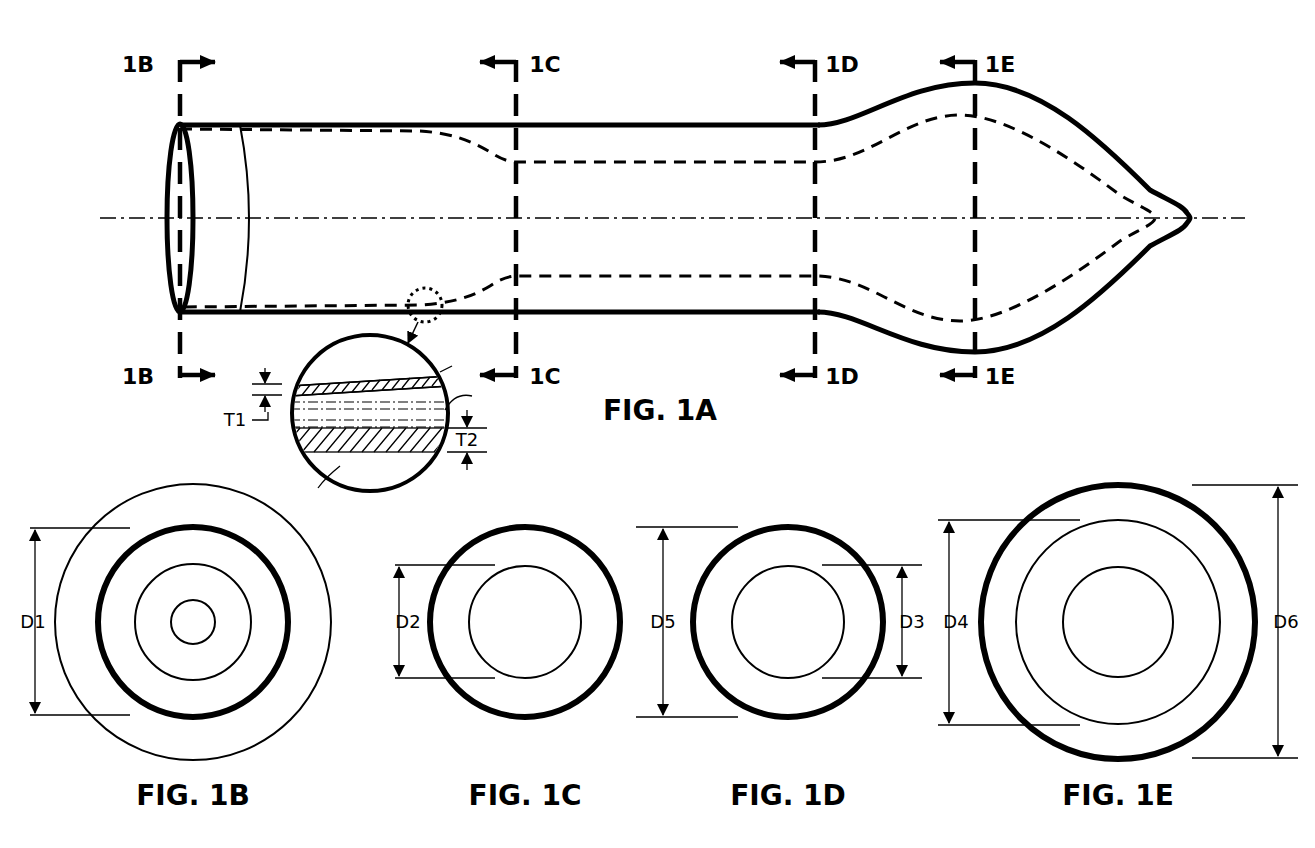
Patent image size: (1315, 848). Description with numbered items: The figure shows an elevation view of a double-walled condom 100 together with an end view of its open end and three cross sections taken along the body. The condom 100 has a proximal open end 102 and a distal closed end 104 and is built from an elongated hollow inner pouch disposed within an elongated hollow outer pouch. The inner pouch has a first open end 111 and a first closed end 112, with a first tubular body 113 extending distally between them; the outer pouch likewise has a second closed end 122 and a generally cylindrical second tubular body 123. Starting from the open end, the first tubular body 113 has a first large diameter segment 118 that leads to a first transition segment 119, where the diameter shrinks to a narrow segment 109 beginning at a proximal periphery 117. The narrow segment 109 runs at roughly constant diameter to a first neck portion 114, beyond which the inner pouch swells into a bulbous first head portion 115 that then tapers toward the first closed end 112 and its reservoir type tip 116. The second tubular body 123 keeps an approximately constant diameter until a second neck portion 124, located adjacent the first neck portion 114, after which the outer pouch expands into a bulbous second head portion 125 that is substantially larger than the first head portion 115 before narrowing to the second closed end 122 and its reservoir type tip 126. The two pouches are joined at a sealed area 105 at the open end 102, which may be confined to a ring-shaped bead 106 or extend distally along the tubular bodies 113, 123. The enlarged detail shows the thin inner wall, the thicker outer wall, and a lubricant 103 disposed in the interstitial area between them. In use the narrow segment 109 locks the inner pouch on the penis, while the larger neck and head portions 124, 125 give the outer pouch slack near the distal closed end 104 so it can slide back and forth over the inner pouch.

In FIG. 1A, the condom 100 is at (688, 82).
In FIG. 1A, the proximal open end 102 is at (152, 146).
In FIG. 1A, the lubricant 103 is at (430, 416).
In FIG. 1A, the distal closed end 104 is at (1145, 146).
In FIG. 1A, the sealed area 105 is at (248, 146).
In FIG. 1A, the ring-shaped bead 106 is at (190, 135).
In FIG. 1B, the ring-shaped bead 106 is at (178, 524).
In FIG. 1C, the ring-shaped bead 106 is at (525, 702).
In FIG. 1D, the ring-shaped bead 106 is at (792, 698).
In FIG. 1E, the ring-shaped bead 106 is at (1100, 732).
In FIG. 1A, the narrow segment 109 is at (665, 160).
In FIG. 1C, the narrow segment 109 is at (555, 672).
In FIG. 1D, the narrow segment 109 is at (780, 566).
In FIG. 1E, the narrow segment 109 is at (1122, 566).
In FIG. 1A, the first open end 111 is at (168, 304).
In FIG. 1A, the first closed end 112 is at (1095, 262).
In FIG. 1A, the first tubular body 113 is at (708, 150).
In FIG. 1A, the first neck portion 114 is at (822, 276).
In FIG. 1D, the first neck portion 114 is at (770, 674).
In FIG. 1E, the first neck portion 114 is at (1088, 670).
In FIG. 1A, the first head portion 115 is at (950, 322).
In FIG. 1E, the first head portion 115 is at (1113, 520).
In FIG. 1A, the reservoir type tip 116 is at (1158, 236).
In FIG. 1B, the reservoir type tip 116 is at (184, 600).
In FIG. 1A, the proximal periphery 117 is at (508, 276).
In FIG. 1B, the proximal periphery 117 is at (168, 678).
In FIG. 1C, the proximal periphery 117 is at (478, 644).
In FIG. 1A, the first large diameter segment 118 is at (420, 128).
In FIG. 1A, the first transition segment 119 is at (490, 148).
In FIG. 1A, the second closed end 122 is at (1102, 300).
In FIG. 1A, the second tubular body 123 is at (500, 125).
In FIG. 1C, the second tubular body 123 is at (507, 524).
In FIG. 1A, the second neck portion 124 is at (812, 312).
In FIG. 1D, the second neck portion 124 is at (817, 524).
In FIG. 1A, the second head portion 125 is at (1008, 352).
In FIG. 1B, the second head portion 125 is at (190, 484).
In FIG. 1E, the second head portion 125 is at (1132, 486).
In FIG. 1A, the reservoir type tip 126 is at (1193, 204).